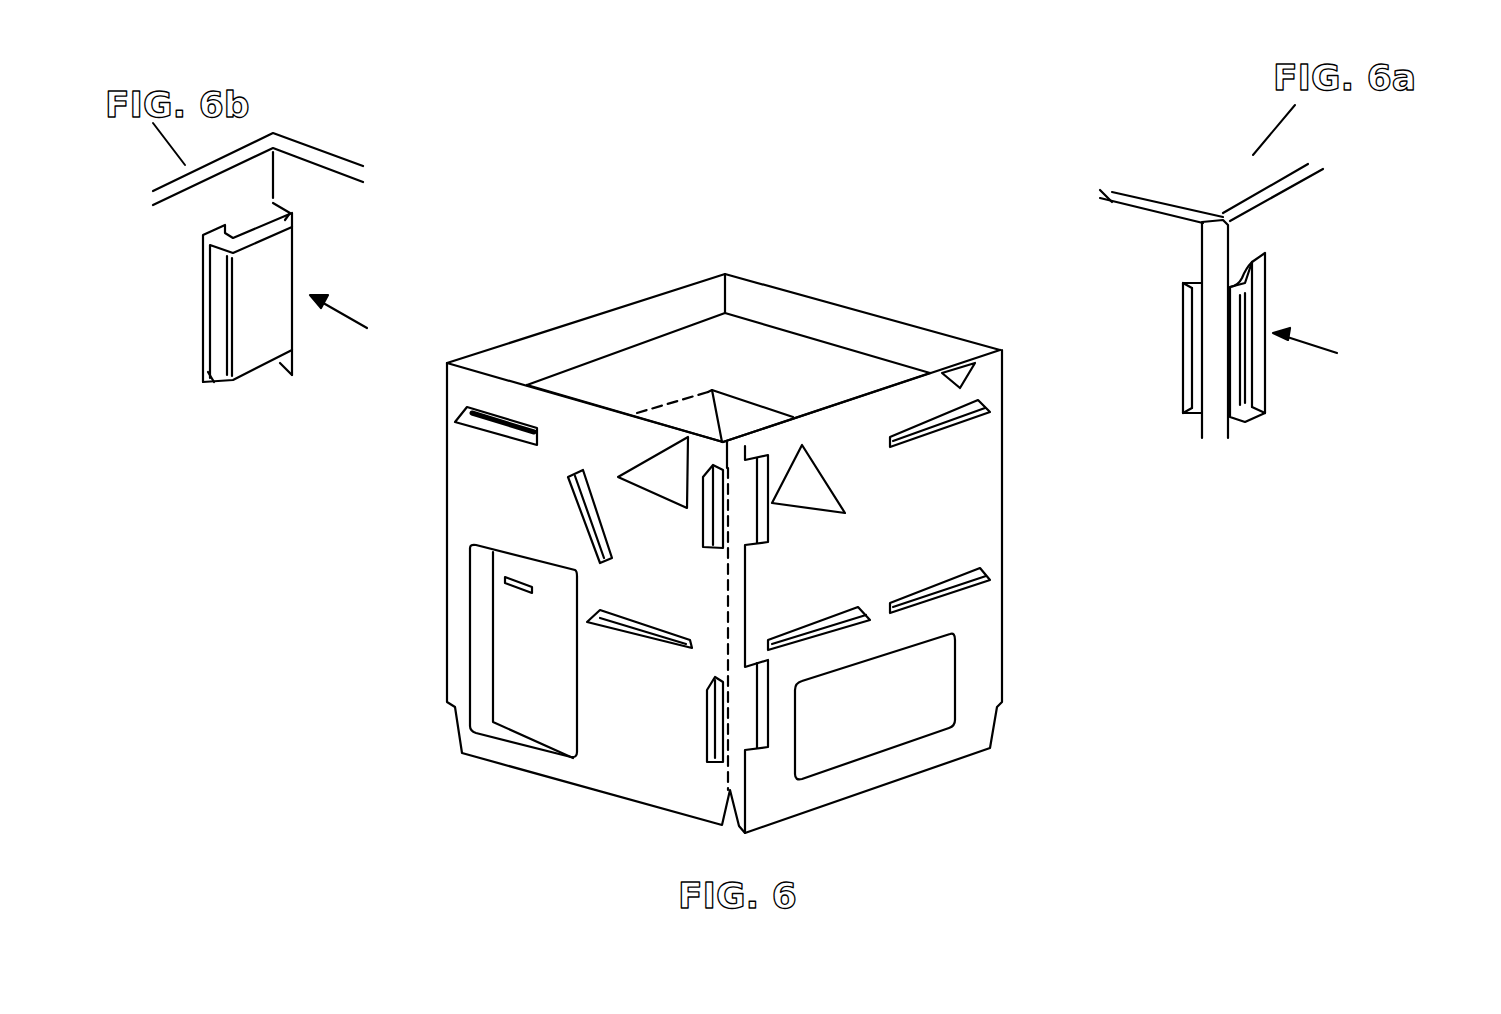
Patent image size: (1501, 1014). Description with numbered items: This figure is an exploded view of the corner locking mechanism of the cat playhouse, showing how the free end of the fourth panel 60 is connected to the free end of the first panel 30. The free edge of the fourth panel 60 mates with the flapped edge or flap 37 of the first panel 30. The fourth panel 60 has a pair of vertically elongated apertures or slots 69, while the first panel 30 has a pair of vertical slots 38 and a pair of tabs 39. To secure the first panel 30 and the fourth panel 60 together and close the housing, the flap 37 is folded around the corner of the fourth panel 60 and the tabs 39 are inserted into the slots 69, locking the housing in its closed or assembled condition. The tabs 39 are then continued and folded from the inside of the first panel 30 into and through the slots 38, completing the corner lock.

In FIG. 6A, the first wall panel 30 is at (1115, 242).
In FIG. 6A, the flap 37 is at (1213, 243).
In FIG. 6B, the vertical slots 38 is at (285, 217).
In FIG. 6A, the tabs 39 is at (1262, 385).
In FIG. 6B, the tabs 39 is at (218, 297).
In FIG. 6, the fourth wall panel 60 is at (983, 638).
In FIG. 6A, the fourth wall panel 60 is at (1352, 262).
In FIG. 6A, the vertical slots 69 is at (1257, 293).